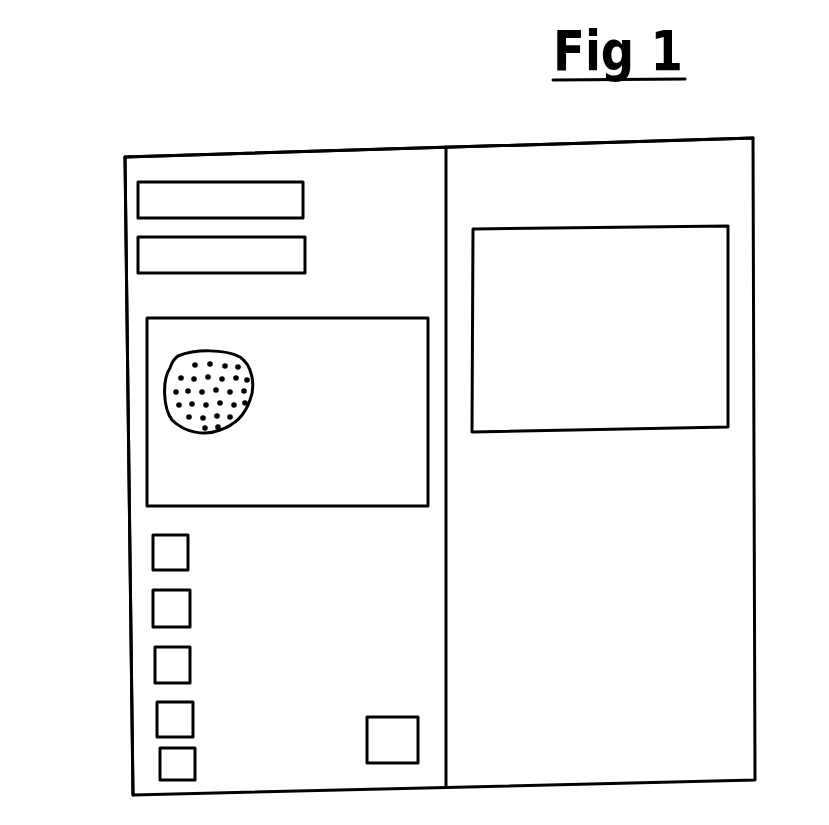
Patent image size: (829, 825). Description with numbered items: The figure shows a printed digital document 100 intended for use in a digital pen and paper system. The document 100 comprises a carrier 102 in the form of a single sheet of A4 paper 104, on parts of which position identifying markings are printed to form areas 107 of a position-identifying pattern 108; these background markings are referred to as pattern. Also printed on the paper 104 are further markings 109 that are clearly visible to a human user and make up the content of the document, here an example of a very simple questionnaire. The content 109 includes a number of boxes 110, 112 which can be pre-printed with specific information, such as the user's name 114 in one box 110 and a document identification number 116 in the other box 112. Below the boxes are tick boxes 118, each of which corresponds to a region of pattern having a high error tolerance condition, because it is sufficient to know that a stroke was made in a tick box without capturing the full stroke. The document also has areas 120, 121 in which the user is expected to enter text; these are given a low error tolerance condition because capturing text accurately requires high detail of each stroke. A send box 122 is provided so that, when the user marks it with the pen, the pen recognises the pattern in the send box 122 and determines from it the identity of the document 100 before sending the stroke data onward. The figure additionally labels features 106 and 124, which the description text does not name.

The printed digital document 100 is at (409, 165).
The carrier 102 is at (211, 167).
The sheet of A4 paper 104 is at (148, 163).
The handwritten annotation blob 106 is at (148, 428).
The areas of position-identifying pattern 107 is at (146, 407).
The position-identifying pattern 108 is at (193, 432).
The content markings 109 is at (140, 555).
The box 110 is at (212, 203).
The box 112 is at (215, 261).
The user's name 114 is at (155, 206).
The document identification number 116 is at (168, 263).
The tick boxes 118 is at (152, 608).
The text entry area 120 is at (235, 428).
The text entry area 121 is at (568, 433).
The send box 122 is at (418, 740).
The rating labels 124 is at (285, 605).